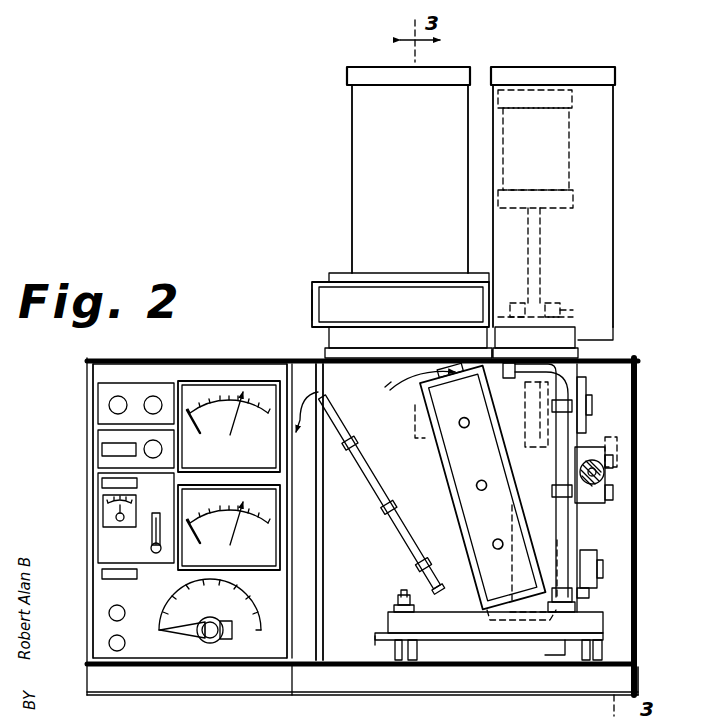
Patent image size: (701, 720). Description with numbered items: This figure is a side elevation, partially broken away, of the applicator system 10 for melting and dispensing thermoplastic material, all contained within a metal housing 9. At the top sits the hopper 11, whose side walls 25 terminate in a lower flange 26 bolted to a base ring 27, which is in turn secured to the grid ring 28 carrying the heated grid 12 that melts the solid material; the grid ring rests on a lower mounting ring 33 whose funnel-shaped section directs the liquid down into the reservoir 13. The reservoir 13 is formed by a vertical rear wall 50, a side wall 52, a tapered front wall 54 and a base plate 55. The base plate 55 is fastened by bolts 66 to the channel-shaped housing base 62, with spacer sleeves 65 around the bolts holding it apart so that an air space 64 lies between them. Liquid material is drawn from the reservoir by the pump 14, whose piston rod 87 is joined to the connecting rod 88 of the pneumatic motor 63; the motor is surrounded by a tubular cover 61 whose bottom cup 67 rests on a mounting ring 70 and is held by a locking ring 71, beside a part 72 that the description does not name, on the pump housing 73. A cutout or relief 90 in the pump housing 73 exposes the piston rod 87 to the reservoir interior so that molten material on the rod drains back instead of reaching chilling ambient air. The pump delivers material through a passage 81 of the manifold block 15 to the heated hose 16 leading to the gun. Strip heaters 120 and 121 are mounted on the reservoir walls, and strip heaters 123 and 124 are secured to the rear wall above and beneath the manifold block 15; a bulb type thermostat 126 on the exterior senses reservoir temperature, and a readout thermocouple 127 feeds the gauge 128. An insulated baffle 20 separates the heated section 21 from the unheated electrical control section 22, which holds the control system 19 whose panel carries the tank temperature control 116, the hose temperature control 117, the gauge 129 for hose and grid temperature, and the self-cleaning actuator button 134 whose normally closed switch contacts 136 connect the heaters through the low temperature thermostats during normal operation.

The housing 9 is at (178, 357).
The applicator system 10 is at (215, 228).
The hopper 11 is at (362, 155).
The heated grid 12 is at (330, 300).
The reservoir 13 is at (414, 512).
The pump 14 is at (514, 440).
The manifold block 15 is at (608, 487).
The heated hose 16 is at (618, 477).
The control system 19 is at (118, 375).
The insulated baffle 20 is at (305, 580).
The heated section 21 is at (330, 665).
The electrical control section 22 is at (143, 640).
The side walls 25 is at (407, 176).
The lower flange 26 is at (358, 274).
The base ring 27 is at (385, 283).
The grid ring 28 is at (310, 308).
The lower mounting ring 33 is at (350, 335).
The rear wall 50 is at (592, 365).
The side wall 52 is at (363, 435).
The front wall 54 is at (368, 472).
The base plate 55 is at (390, 622).
The pump housing cover 61 is at (615, 202).
The housing base 62 is at (625, 680).
The pneumatic motor 63 is at (582, 160).
The air space 64 is at (480, 648).
The spacer sleeves 65 is at (595, 652).
The bolts 66 is at (406, 598).
The bottom cup 67 is at (600, 325).
The mounting ring 70 is at (535, 342).
The locking ring 71 is at (574, 318).
The foot 72 is at (560, 293).
The pump housing 73 is at (520, 514).
The passage 81 is at (592, 462).
The piston rod 87 is at (525, 407).
The connecting rod 88 is at (545, 248).
The relief 90 is at (534, 491).
The tank temperature control 116 is at (208, 619).
The hose temperature control 117 is at (102, 508).
The heater 120 is at (355, 447).
The heater 121 is at (462, 497).
The strip heater 123 is at (593, 393).
The strip heater 124 is at (592, 580).
The bulb type thermostat 126 is at (562, 558).
The readout thermocouple 127 is at (584, 591).
The gauge 128 is at (263, 532).
The gauge 129 is at (218, 383).
The actuator button 134 is at (120, 641).
The switch contacts 136 is at (300, 705).